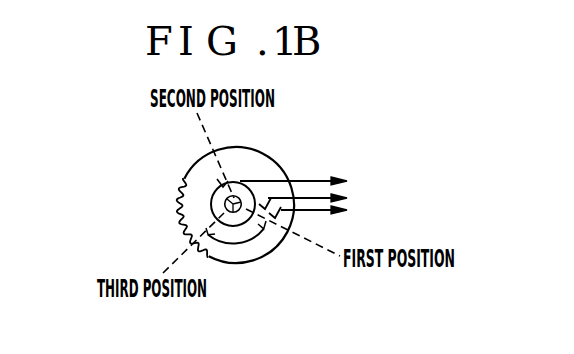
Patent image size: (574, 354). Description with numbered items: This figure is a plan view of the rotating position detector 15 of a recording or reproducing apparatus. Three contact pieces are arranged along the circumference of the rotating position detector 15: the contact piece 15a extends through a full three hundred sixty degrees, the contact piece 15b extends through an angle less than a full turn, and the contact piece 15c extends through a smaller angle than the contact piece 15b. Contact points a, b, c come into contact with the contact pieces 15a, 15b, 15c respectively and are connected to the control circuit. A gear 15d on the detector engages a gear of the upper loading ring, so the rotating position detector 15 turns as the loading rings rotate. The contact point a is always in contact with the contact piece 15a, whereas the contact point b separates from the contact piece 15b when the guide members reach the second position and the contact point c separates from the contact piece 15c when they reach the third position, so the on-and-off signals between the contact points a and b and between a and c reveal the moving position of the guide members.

The rotating position detector 15 is at (272, 257).
The contact piece 15a is at (225, 209).
The contact piece 15b is at (220, 186).
The contact piece 15c is at (236, 244).
The gear 15d is at (180, 202).
The contact point a is at (241, 180).
The contact point b is at (267, 200).
The contact point c is at (283, 213).